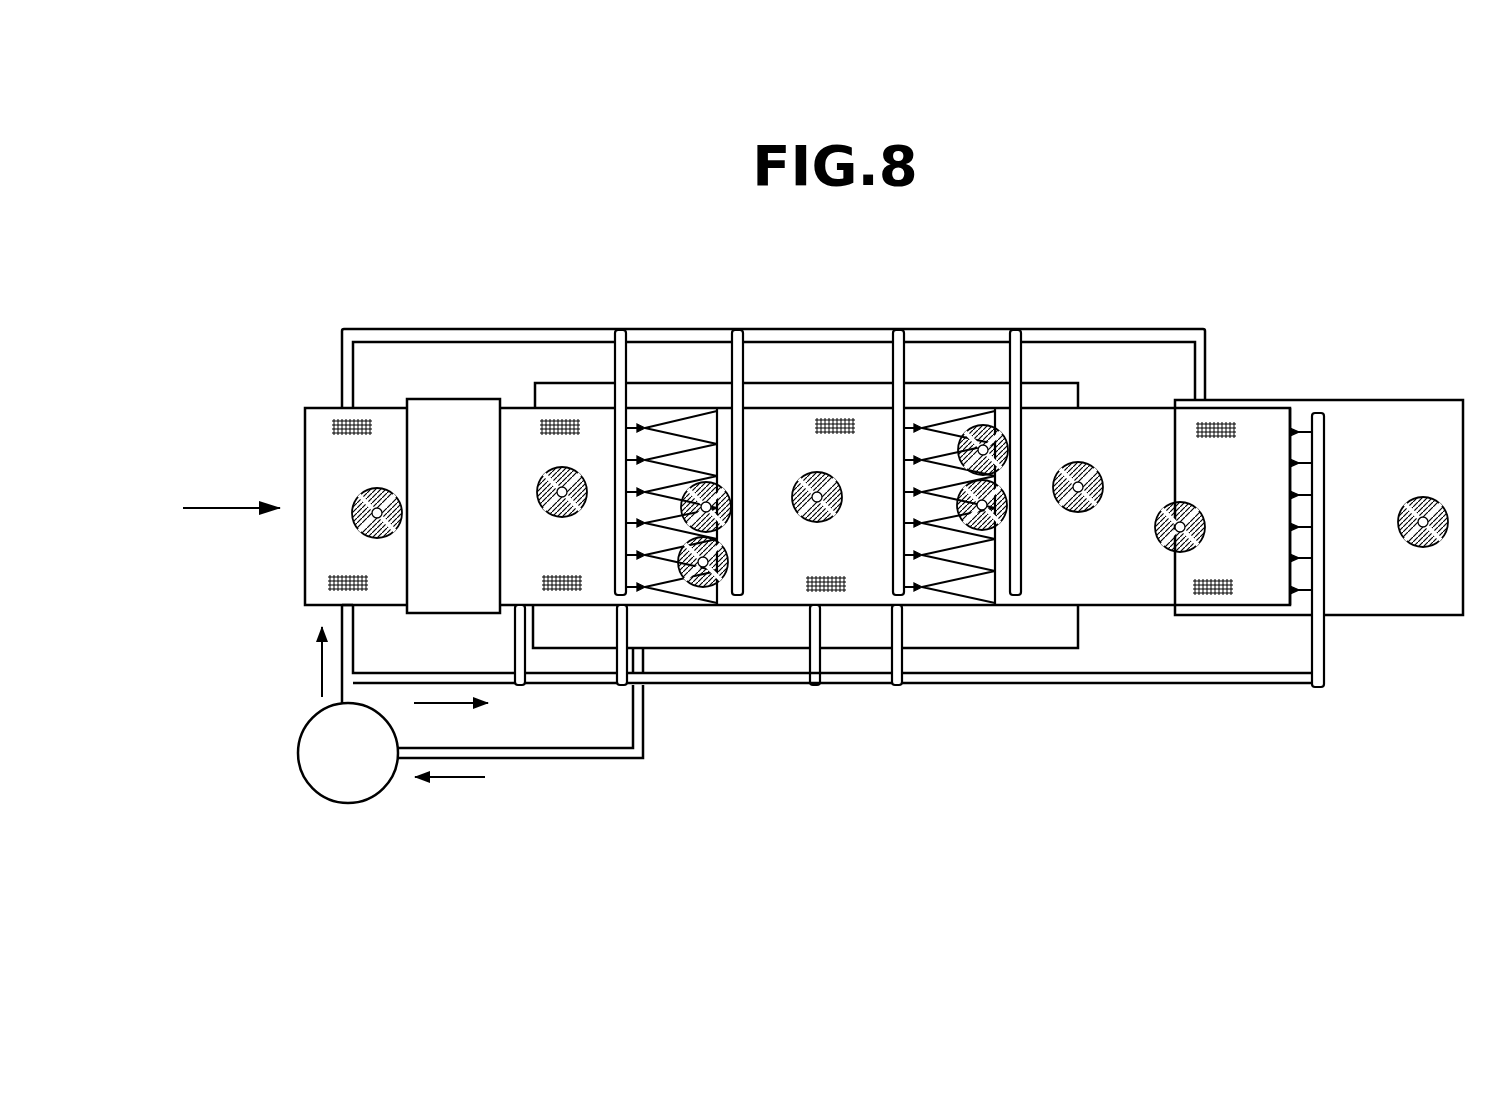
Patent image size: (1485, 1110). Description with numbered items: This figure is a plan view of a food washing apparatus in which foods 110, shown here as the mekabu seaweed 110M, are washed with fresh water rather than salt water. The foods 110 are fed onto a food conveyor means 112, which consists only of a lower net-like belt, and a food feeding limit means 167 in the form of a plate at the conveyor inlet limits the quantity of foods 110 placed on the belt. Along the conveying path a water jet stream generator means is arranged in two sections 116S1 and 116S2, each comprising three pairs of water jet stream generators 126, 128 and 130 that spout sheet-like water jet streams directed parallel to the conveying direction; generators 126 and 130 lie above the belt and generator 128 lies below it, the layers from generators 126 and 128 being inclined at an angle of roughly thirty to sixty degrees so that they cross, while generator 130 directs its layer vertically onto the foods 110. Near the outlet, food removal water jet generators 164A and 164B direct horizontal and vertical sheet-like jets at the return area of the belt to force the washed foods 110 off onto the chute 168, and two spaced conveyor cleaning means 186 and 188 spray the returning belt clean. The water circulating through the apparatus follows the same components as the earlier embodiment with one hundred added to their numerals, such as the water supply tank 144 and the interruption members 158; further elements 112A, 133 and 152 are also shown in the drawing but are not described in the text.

The foods 110 is at (367, 495).
The seaweed 110M is at (646, 500).
The food conveyor means 112 is at (297, 575).
The chamber outlet end portion 112A is at (1265, 580).
The generator means section 116S1 is at (707, 372).
The generator means section 116S2 is at (980, 353).
The water jet stream generator 126 is at (632, 370).
The water jet stream generator 128 is at (623, 625).
The water jet stream generator 130 is at (740, 450).
The pump 133 is at (312, 757).
The inlet 144 is at (337, 612).
The circulation pipe 152 is at (342, 353).
The upper duct 158 is at (570, 385).
The water jet generator 164A is at (1320, 473).
The water jet generator 164B is at (1205, 382).
The food feeding limit means 167 is at (442, 413).
The chute 168 is at (1425, 420).
The conveyor cleaning means 186 is at (813, 688).
The conveyor cleaning means 188 is at (520, 657).